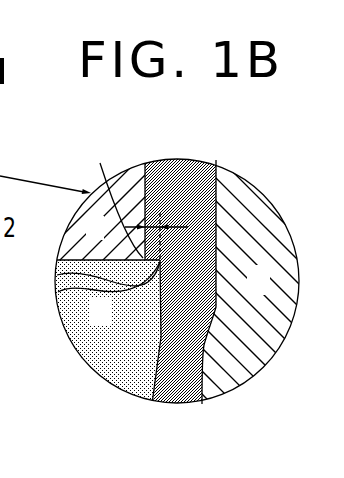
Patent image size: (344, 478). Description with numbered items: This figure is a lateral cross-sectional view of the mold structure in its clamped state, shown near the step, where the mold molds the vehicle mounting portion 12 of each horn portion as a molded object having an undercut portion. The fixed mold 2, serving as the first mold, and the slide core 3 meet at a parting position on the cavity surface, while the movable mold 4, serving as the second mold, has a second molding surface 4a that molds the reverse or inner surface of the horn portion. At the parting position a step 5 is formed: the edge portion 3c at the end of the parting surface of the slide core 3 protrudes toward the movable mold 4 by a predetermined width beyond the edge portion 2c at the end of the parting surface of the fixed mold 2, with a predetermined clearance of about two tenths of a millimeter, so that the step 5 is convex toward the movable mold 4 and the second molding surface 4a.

The fixed mold 2 is at (103, 241).
The edge portion 2c is at (114, 197).
The slide core 3 is at (109, 323).
The edge portion 3c is at (58, 293).
The movable mold 4 is at (268, 292).
The second molding surface 4a is at (202, 404).
The step 5 is at (58, 275).
The vehicle mounting portion 12 is at (175, 389).